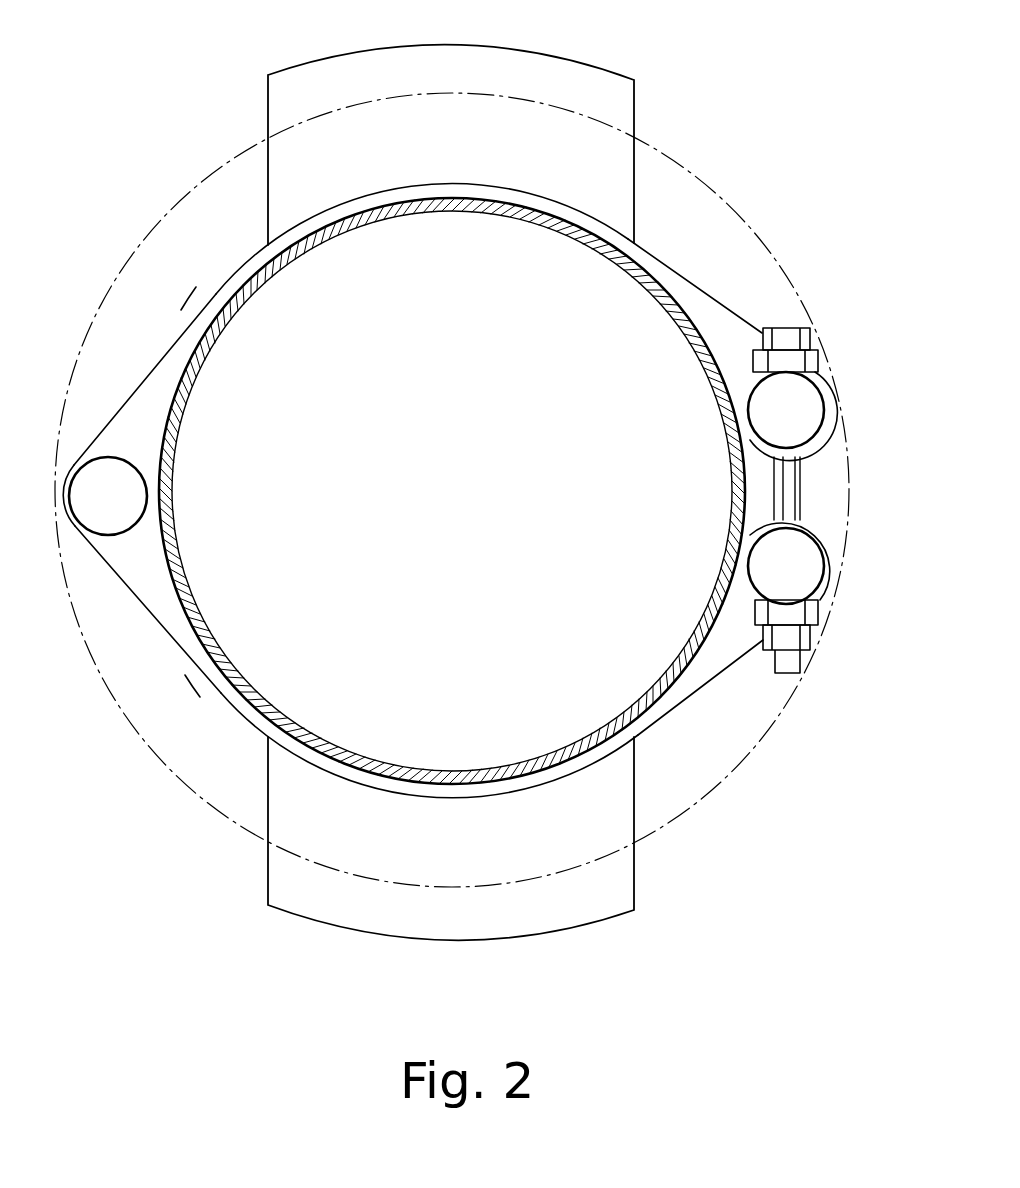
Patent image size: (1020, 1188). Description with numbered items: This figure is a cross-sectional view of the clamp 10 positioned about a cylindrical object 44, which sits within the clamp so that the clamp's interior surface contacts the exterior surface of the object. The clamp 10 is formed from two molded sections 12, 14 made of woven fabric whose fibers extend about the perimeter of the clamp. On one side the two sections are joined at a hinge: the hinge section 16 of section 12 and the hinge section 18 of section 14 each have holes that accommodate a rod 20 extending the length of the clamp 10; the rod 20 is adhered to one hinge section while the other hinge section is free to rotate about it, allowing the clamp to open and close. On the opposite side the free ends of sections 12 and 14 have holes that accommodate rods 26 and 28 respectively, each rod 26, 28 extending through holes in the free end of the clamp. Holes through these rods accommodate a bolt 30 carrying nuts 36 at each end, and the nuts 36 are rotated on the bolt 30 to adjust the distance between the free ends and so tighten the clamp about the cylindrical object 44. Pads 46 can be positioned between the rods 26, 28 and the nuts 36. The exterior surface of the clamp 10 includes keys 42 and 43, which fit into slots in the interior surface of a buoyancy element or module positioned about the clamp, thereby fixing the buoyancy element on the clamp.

The clamp 10 is at (722, 268).
The molded section 12 is at (416, 186).
The molded section 14 is at (153, 590).
The hinge section 16 is at (145, 422).
The hinge section 18 is at (100, 553).
The rod 20 is at (130, 489).
The rod 26 is at (803, 410).
The rod 28 is at (800, 570).
The bolt 30 is at (790, 513).
The nut 36 is at (806, 341).
The key 42 is at (548, 78).
The key 43 is at (625, 860).
The cylindrical object 44 is at (540, 222).
The pad 46 is at (818, 363).